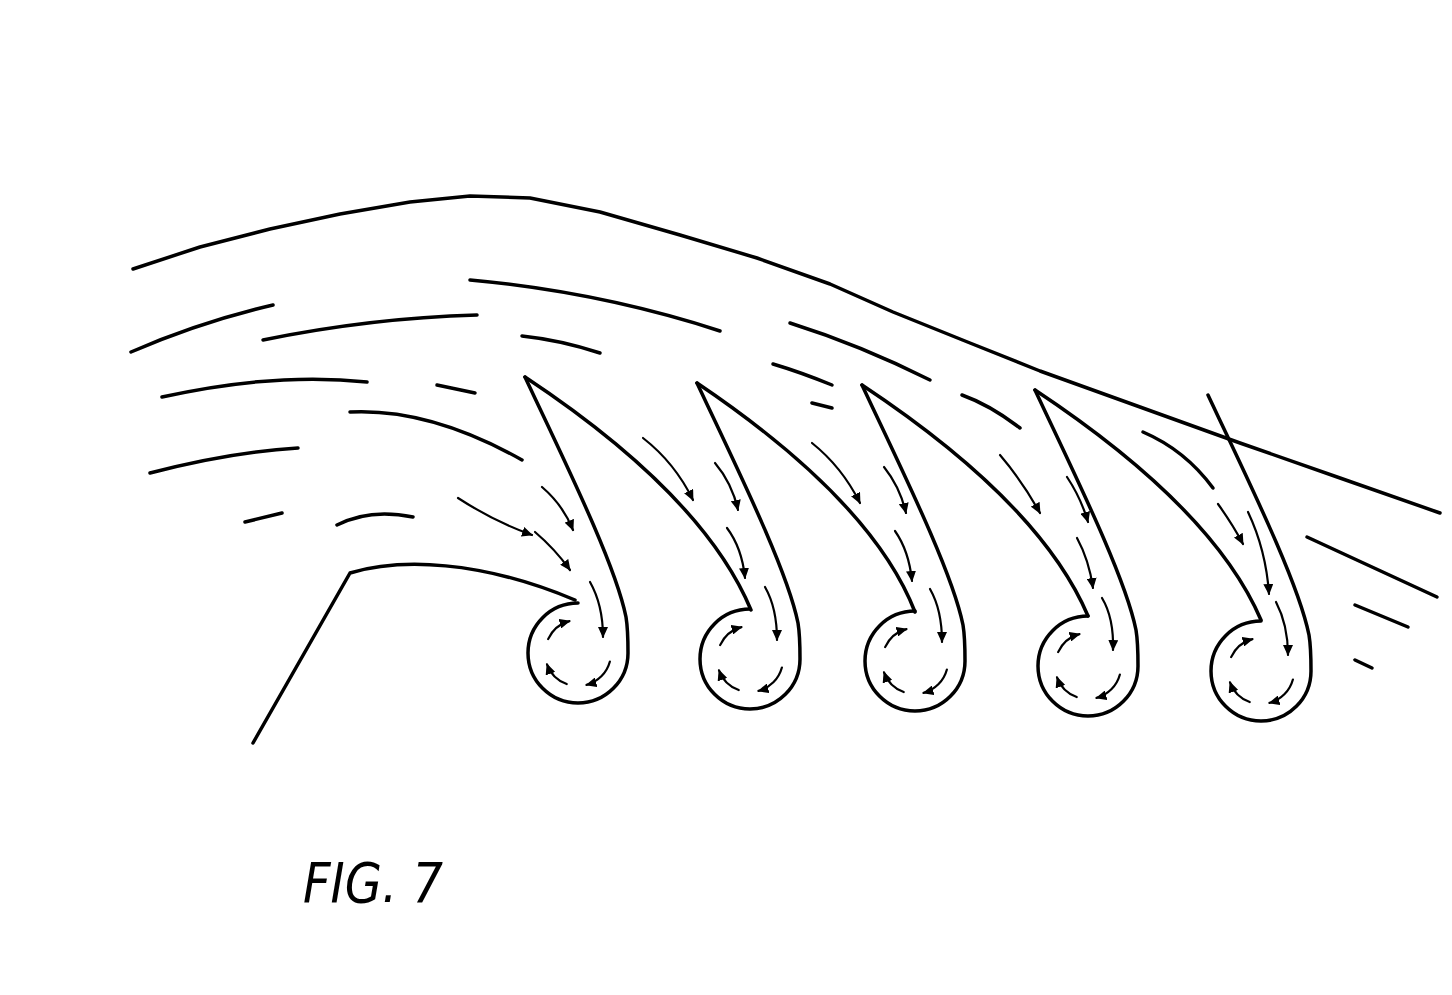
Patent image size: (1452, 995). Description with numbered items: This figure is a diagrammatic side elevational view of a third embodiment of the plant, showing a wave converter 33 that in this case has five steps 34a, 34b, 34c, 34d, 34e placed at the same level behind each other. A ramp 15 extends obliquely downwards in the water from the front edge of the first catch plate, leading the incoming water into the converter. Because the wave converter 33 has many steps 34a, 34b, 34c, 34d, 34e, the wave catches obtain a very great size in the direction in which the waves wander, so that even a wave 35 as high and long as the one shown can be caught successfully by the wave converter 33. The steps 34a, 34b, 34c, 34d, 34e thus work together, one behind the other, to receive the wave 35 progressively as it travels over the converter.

The ramp 15 is at (297, 662).
The wave converter 33 is at (710, 286).
The first step 34a is at (550, 697).
The second step 34b is at (737, 708).
The third step 34c is at (890, 710).
The fourth step 34d is at (1077, 718).
The fifth step 34e is at (1268, 728).
The wave 35 is at (479, 197).